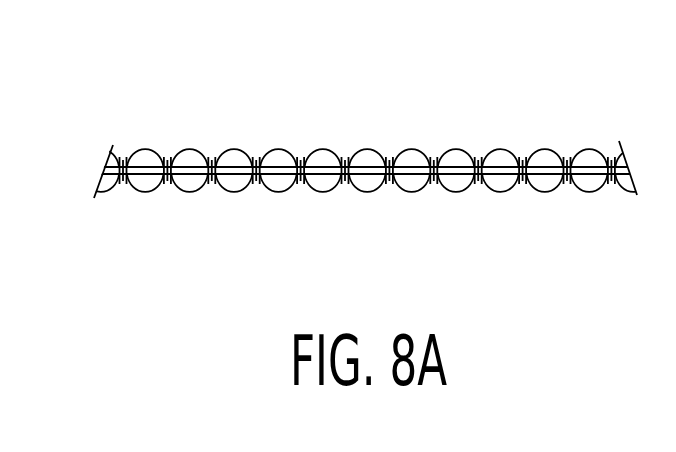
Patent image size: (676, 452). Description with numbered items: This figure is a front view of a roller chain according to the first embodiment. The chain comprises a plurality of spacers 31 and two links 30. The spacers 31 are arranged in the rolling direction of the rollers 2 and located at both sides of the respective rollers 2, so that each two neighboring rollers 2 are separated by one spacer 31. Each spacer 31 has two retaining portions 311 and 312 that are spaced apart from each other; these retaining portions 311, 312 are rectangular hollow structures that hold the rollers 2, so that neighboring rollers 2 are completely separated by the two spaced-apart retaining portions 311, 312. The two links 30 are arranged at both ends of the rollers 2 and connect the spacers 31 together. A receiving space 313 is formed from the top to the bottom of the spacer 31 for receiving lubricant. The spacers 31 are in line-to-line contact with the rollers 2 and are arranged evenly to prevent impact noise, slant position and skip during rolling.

The roller 2 is at (543, 158).
The link 30 is at (98, 176).
The spacer 31 is at (207, 144).
The retaining portion 311 is at (343, 153).
The retaining portion 312 is at (350, 152).
The receiving space 313 is at (345, 186).